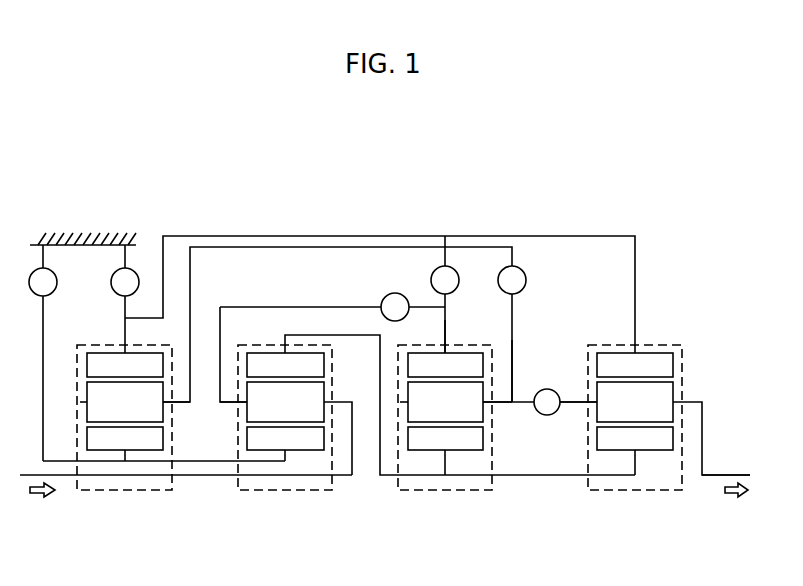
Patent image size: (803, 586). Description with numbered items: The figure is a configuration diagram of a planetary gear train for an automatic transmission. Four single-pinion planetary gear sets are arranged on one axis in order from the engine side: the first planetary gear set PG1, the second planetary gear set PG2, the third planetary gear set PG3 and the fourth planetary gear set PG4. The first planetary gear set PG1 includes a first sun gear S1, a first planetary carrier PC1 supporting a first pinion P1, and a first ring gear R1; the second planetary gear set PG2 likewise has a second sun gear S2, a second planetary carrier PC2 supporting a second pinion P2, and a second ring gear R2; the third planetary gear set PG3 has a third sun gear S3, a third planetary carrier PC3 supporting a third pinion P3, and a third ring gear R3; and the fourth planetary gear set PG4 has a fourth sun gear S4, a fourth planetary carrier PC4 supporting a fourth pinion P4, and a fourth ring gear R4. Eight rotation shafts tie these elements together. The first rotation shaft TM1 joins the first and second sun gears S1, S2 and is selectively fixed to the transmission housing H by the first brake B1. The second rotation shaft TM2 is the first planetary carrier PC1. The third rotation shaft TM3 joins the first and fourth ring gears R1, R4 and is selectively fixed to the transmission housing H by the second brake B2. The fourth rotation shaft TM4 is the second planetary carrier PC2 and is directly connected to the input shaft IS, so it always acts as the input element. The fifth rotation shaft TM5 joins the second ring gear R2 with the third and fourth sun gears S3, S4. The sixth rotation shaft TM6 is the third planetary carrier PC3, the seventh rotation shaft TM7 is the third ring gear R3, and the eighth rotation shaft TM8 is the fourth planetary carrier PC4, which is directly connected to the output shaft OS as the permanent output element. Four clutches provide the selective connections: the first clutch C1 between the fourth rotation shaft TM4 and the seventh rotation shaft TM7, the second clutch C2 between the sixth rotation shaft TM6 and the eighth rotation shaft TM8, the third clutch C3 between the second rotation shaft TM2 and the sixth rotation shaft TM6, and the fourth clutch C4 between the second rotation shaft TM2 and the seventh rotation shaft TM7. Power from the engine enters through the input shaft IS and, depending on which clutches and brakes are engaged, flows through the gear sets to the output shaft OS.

The transmission housing H is at (82, 232).
The first brake B1 is at (43, 353).
The second brake B2 is at (125, 299).
The first clutch C1 is at (332, 347).
The second clutch C2 is at (540, 402).
The third clutch C3 is at (512, 334).
The fourth clutch C4 is at (445, 294).
The first planetary gear set PG1 is at (139, 448).
The second planetary gear set PG2 is at (270, 448).
The third planetary gear set PG3 is at (464, 448).
The fourth planetary gear set PG4 is at (620, 448).
The first ring gear R1 is at (125, 365).
The second ring gear R2 is at (285, 365).
The third ring gear R3 is at (445, 365).
The fourth ring gear R4 is at (635, 365).
The first pinion P1 is at (121, 402).
The second pinion P2 is at (285, 402).
The third pinion P3 is at (441, 402).
The fourth pinion P4 is at (635, 402).
The first sun gear S1 is at (125, 438).
The second sun gear S2 is at (285, 438).
The third sun gear S3 is at (445, 438).
The fourth sun gear S4 is at (635, 438).
The first planetary carrier PC1 is at (184, 410).
The second planetary carrier PC2 is at (226, 410).
The third planetary carrier PC3 is at (518, 410).
The fourth planetary carrier PC4 is at (574, 410).
The first rotation shaft TM1 is at (200, 466).
The second rotation shaft TM2 is at (272, 245).
The third rotation shaft TM3 is at (342, 234).
The fourth rotation shaft TM4 is at (355, 435).
The fifth rotation shaft TM5 is at (531, 479).
The sixth rotation shaft TM6 is at (517, 355).
The seventh rotation shaft TM7 is at (450, 342).
The eighth rotation shaft TM8 is at (706, 425).
The input shaft IS is at (38, 474).
The output shaft OS is at (718, 474).